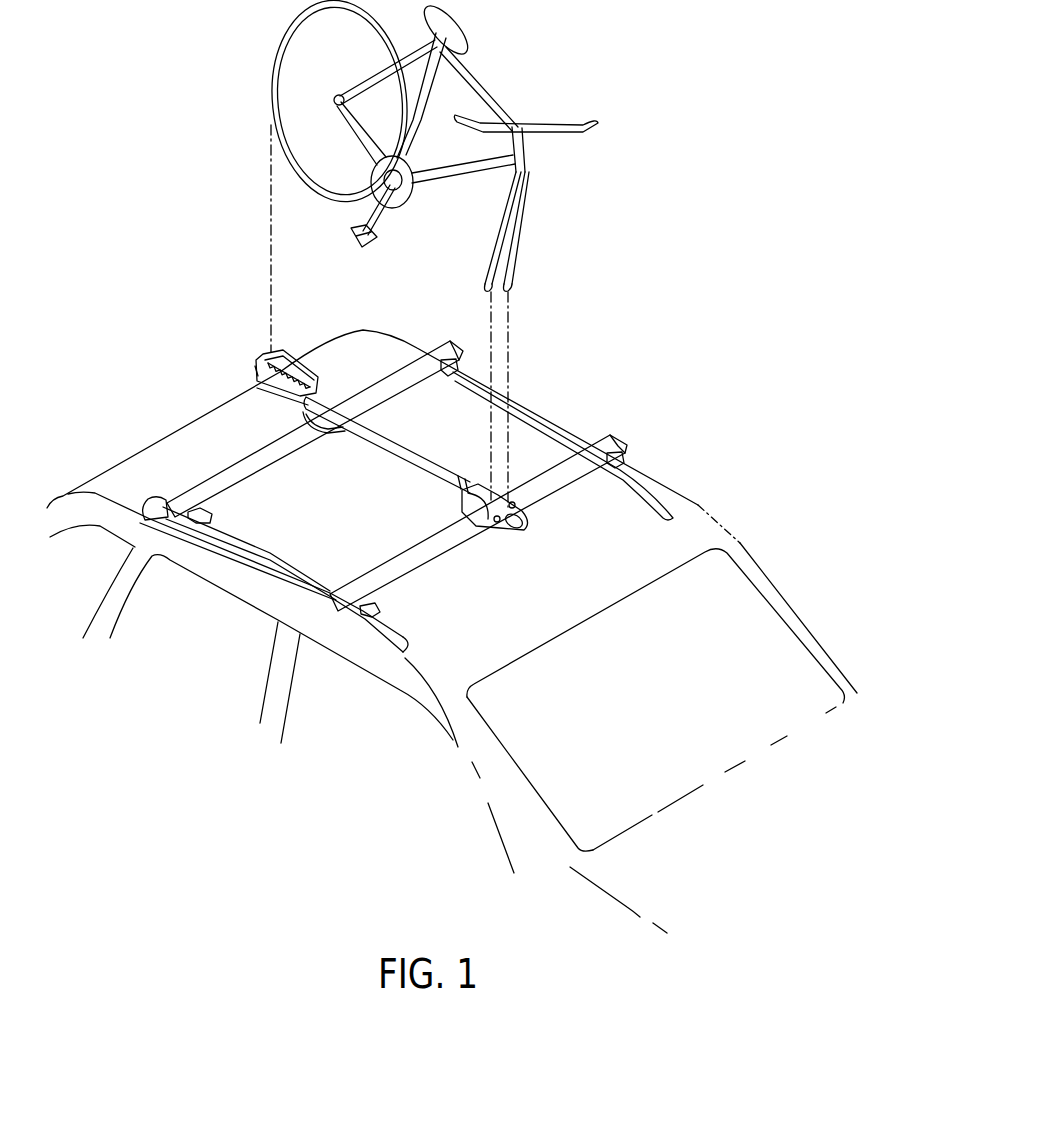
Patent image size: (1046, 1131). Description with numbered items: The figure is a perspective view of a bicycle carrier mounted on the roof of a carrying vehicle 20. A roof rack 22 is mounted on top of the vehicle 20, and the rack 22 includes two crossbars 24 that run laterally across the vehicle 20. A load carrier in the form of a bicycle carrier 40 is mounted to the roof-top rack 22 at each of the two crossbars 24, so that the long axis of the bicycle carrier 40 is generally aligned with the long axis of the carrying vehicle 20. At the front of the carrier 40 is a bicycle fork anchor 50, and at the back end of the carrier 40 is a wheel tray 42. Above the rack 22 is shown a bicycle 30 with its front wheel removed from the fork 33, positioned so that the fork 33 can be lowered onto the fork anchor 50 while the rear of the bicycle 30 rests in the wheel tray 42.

The carrying vehicle 20 is at (583, 605).
The roof rack 22 is at (647, 497).
The crossbars 24 is at (447, 348).
The bicycle 30 is at (527, 100).
The fork 33 is at (537, 252).
The bicycle carrier 40 is at (440, 470).
The wheel tray 42 is at (292, 360).
The bicycle fork anchor 50 is at (501, 540).